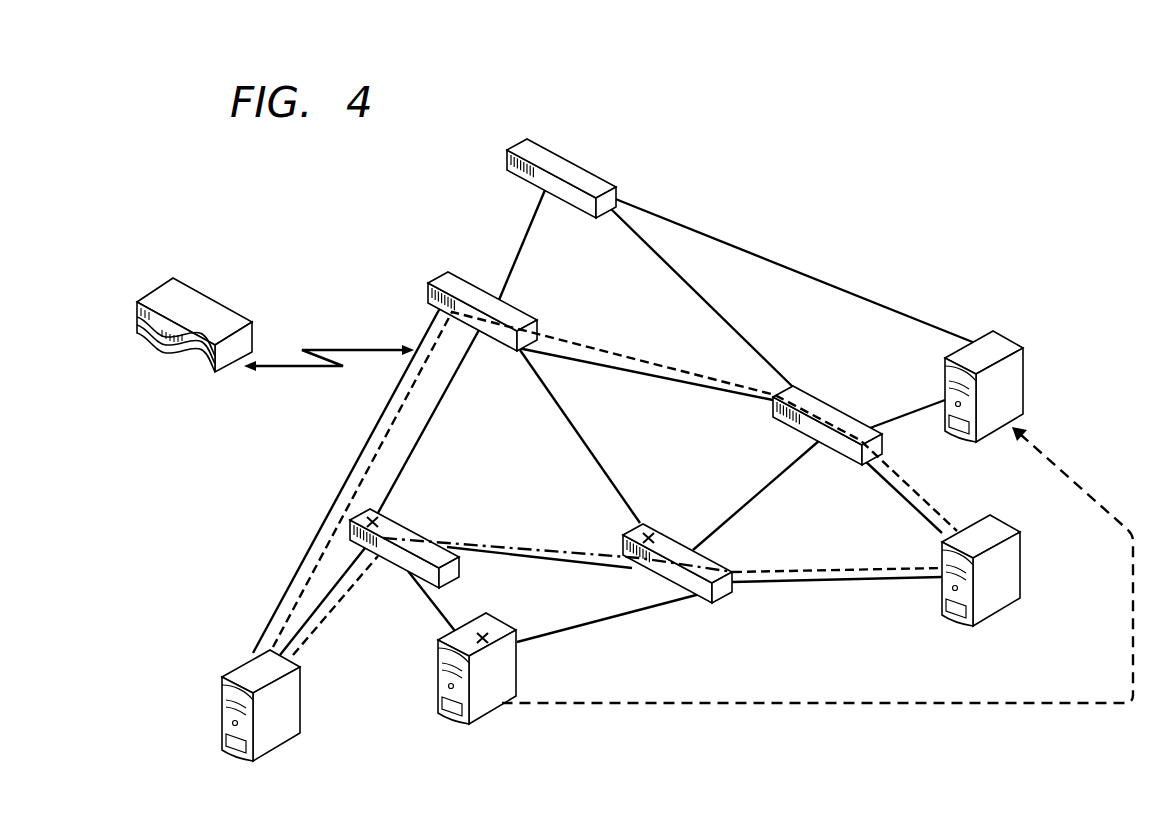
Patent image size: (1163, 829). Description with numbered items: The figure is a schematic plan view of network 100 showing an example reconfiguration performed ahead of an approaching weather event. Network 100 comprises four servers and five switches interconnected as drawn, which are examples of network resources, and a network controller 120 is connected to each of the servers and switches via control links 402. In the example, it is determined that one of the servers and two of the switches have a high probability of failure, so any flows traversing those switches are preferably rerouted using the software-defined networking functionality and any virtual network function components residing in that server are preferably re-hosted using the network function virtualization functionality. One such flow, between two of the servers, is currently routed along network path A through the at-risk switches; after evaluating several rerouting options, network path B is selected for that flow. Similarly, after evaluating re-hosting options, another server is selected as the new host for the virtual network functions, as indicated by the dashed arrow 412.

The network 100 is at (318, 170).
The network controller 120 is at (198, 303).
The control links 402 is at (292, 367).
The dashed arrow 412 is at (722, 706).
The network path A is at (552, 552).
The network path B is at (630, 357).